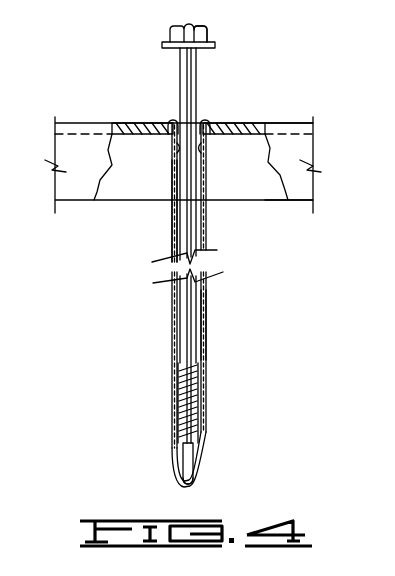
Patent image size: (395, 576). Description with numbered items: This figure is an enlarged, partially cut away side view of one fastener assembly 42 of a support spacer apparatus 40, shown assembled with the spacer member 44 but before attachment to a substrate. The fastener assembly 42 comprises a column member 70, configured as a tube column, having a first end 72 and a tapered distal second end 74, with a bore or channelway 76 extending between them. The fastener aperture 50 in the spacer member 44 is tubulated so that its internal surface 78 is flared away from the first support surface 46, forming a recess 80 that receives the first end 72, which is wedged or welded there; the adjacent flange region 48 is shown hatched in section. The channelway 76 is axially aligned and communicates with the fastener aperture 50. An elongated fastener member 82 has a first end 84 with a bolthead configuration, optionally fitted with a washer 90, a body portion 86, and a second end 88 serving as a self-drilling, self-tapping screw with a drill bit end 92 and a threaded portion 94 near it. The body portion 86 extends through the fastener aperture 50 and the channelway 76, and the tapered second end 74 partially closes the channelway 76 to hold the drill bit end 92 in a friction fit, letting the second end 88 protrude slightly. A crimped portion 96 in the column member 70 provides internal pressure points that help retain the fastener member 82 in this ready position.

The support spacer apparatus 40 is at (95, 119).
The fastener assembly 42 is at (196, 29).
The spacer member 44 is at (168, 122).
The first support surface 46 is at (238, 125).
The right flange portion 48 is at (256, 135).
The fastener aperture 50 is at (205, 120).
The column member 70 is at (206, 238).
The first end 72 is at (172, 190).
The second end 74 is at (203, 455).
The channelway 76 is at (200, 322).
The internal surface 78 is at (172, 119).
The recess 80 is at (205, 143).
The fastener member 82 is at (190, 70).
The first end 84 is at (207, 36).
The body portion 86 is at (175, 236).
The second end 88 is at (185, 447).
The washer 90 is at (166, 47).
The drill bit end 92 is at (190, 478).
The threaded portion 94 is at (188, 393).
The crimped portion 96 is at (170, 149).